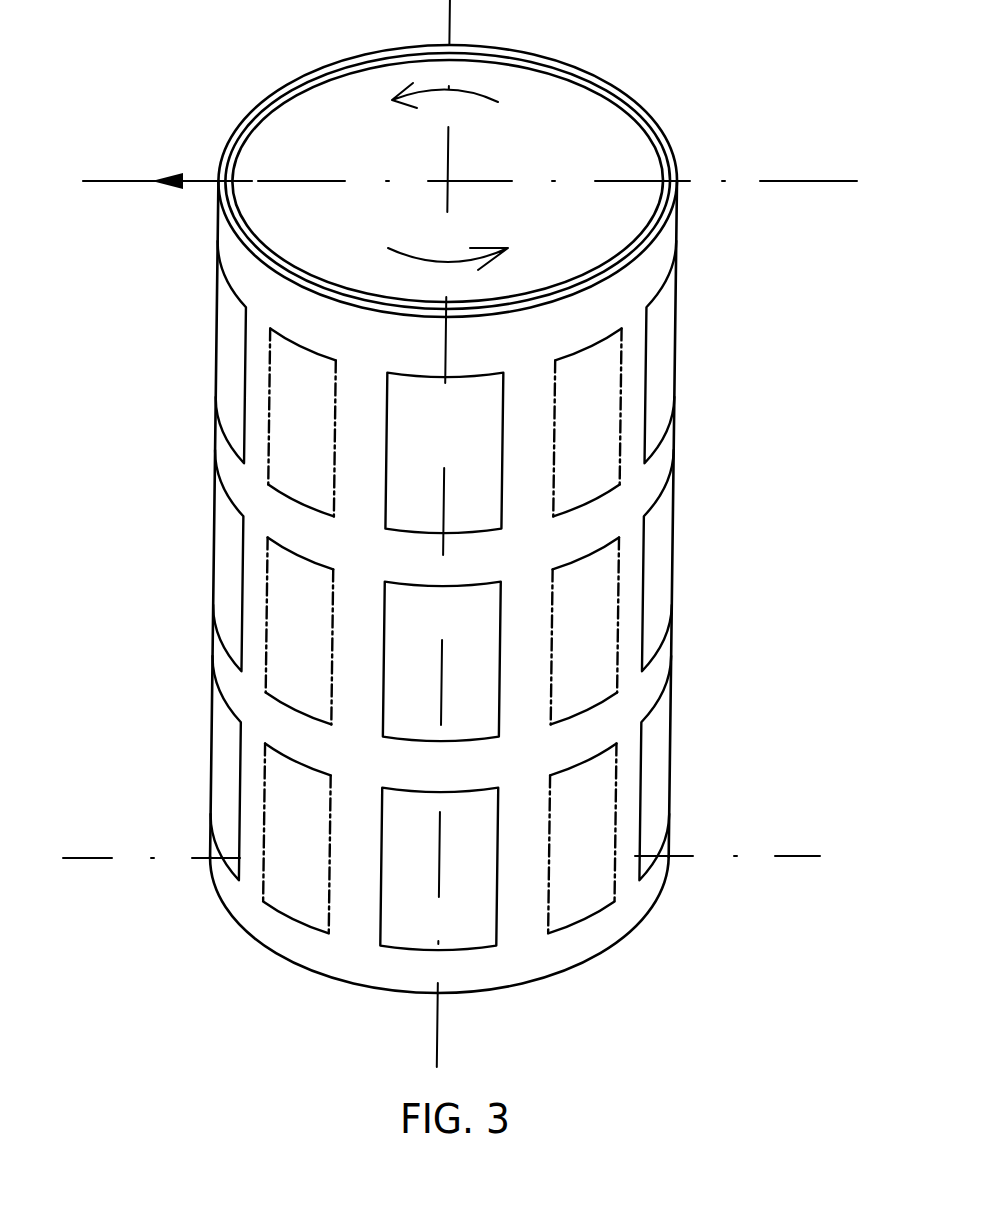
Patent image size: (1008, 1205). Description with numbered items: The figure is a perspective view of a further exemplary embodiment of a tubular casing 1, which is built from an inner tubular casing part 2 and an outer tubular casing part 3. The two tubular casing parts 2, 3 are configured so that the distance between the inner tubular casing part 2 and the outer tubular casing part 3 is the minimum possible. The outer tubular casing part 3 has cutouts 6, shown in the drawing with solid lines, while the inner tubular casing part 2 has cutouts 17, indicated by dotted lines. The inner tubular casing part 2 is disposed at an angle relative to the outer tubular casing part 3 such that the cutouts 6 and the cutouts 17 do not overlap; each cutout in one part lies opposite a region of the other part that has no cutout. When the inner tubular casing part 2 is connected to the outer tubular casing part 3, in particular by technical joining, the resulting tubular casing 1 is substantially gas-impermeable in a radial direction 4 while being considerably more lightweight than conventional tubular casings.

The tubular casing 1 is at (706, 104).
The inner tubular casing part 2 is at (672, 202).
The outer tubular casing part 3 is at (670, 230).
The radial direction 4 is at (201, 178).
The cutouts 6 is at (667, 437).
The cutouts 17 is at (607, 493).